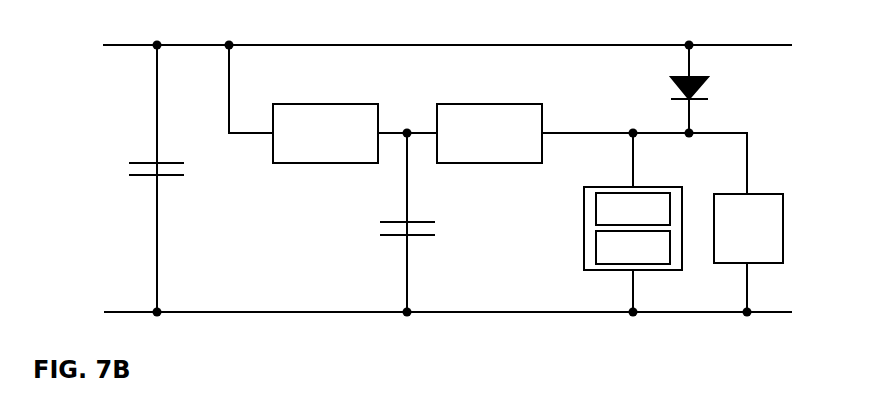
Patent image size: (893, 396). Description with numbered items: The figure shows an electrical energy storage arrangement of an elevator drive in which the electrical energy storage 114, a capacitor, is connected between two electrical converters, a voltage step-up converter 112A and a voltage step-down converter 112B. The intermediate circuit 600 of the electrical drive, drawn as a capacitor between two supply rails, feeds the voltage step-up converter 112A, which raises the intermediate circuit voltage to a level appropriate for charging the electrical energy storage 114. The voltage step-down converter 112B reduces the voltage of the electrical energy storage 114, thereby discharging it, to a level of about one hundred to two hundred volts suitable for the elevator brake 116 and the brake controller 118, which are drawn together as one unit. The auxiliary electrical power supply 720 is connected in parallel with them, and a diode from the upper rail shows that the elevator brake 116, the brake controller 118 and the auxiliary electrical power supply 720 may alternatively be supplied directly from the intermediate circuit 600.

The intermediate circuit 600 is at (100, 95).
The voltage step-up converter 112A is at (325, 133).
The voltage step-down converter 112B is at (489, 133).
The electrical energy storage 114 is at (380, 227).
The elevator brake 116 is at (633, 228).
The brake controller 118 is at (633, 247).
The auxiliary electrical power supply 720 is at (748, 228).